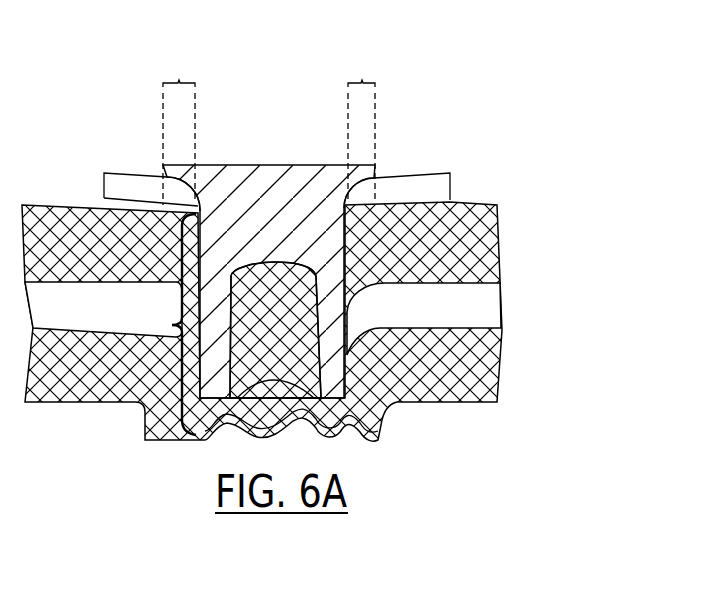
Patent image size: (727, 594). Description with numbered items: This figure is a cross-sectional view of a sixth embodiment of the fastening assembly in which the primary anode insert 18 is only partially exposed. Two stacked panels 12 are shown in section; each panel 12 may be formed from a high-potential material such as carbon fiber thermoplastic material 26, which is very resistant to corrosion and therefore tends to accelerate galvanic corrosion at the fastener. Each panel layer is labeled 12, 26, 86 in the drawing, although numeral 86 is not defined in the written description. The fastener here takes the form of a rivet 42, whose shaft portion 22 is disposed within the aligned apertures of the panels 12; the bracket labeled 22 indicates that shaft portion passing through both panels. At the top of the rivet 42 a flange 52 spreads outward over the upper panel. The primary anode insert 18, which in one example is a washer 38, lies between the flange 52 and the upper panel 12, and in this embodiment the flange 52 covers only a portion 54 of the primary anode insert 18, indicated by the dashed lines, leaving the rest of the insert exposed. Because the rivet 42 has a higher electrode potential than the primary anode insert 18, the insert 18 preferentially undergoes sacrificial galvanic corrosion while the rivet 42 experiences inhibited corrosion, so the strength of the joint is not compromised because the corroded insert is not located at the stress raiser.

The panel 12 is at (311, 321).
The carbon fiber thermoplastic material 26 is at (311, 321).
The panel material 86 is at (477, 249).
The primary anode insert 18 is at (311, 182).
The washer 38 is at (429, 190).
The rivet 42 is at (283, 226).
The flange 52 is at (172, 180).
The portion 54 is at (269, 126).
The shaft portion 22 is at (171, 327).